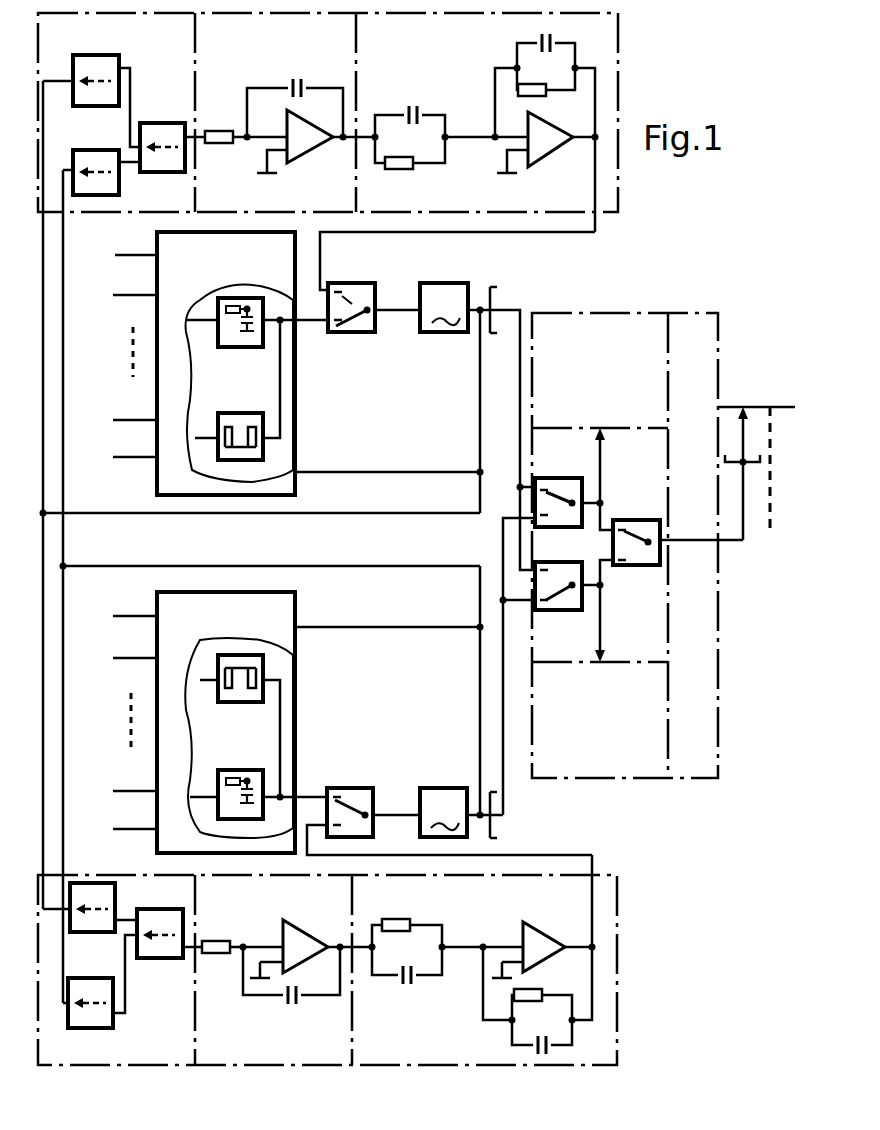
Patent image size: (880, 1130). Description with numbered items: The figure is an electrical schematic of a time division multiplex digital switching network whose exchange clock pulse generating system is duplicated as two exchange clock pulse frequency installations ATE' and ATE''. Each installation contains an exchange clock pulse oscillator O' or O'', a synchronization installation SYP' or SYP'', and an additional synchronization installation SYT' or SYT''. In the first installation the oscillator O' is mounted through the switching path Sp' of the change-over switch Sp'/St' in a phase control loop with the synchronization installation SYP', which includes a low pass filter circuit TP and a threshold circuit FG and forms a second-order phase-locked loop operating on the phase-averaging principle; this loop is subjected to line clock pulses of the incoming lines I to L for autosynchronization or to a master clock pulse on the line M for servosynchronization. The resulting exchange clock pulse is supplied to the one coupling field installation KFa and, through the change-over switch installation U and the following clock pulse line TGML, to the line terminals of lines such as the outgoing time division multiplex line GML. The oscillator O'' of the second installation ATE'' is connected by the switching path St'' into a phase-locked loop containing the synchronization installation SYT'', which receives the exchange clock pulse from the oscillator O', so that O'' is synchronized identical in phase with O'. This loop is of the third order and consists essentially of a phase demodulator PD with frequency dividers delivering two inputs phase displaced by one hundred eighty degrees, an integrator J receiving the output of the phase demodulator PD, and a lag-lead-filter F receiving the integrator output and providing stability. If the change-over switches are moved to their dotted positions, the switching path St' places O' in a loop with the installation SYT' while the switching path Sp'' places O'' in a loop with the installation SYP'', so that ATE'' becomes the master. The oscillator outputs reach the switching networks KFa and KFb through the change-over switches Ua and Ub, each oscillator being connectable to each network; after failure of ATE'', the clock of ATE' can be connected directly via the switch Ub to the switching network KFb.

The phase demodulator PD is at (124, 527).
The integrator J is at (288, 536).
The lag-lead-filter F is at (484, 541).
The additional synchronization installation SYT' is at (356, 533).
The additional synchronization installation SYT'' is at (374, 970).
The exchange clock pulse frequency installation ATE' is at (346, 525).
The exchange clock pulse frequency installation ATE'' is at (330, 709).
The synchronization installation SYP' is at (318, 363).
The synchronization installation SYP'' is at (318, 722).
The low pass filter circuit TP is at (233, 347).
The threshold circuit FG is at (240, 398).
The switching path of change-over switch St' is at (374, 293).
The switching path of change-over switch St'' is at (373, 820).
The switching path of change-over switch Sp' is at (355, 349).
The switching path of change-over switch Sp'' is at (355, 781).
The exchange clock pulse oscillator O' is at (477, 413).
The exchange clock pulse oscillator O'' is at (461, 800).
The coupling field installation KFa is at (625, 545).
The switching network installation KFb is at (600, 697).
The change-over switch installation Ua is at (577, 478).
The change-over switch installation Ub is at (577, 612).
The change-over switch installation U is at (648, 520).
The outgoing time division multiplex line GML is at (759, 460).
The clock pulse line TGML is at (745, 515).
The incoming line I is at (134, 529).
The incoming line L is at (135, 525).
The master clock pulse line M is at (135, 523).